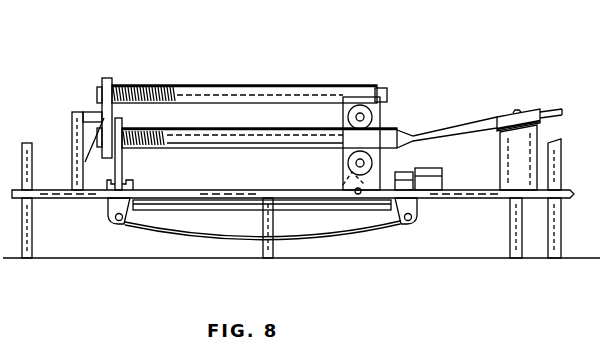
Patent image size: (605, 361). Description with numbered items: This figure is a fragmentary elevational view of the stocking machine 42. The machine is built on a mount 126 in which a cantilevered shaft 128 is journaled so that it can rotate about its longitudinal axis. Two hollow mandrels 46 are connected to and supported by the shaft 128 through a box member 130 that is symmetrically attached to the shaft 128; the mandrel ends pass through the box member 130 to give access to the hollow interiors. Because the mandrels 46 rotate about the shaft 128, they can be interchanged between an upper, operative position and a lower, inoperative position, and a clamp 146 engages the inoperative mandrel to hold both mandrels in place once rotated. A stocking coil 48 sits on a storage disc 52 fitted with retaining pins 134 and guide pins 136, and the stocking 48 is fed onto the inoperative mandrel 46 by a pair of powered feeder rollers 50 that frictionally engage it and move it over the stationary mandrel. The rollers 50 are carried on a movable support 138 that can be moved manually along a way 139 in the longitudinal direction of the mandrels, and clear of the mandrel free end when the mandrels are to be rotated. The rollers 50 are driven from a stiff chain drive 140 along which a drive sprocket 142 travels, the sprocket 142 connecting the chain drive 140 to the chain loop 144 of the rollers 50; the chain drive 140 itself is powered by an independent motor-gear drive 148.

The stocking machine 42 is at (234, 76).
The mandrels 46 is at (106, 112).
The stocking coil 48 is at (145, 123).
The feeder rollers 50 is at (389, 107).
The storage disc 52 is at (558, 103).
The mount 126 is at (77, 140).
The cantilevered shaft 128 is at (101, 116).
The box member 130 is at (103, 80).
The retaining pins 134 is at (517, 110).
The guide pins 136 is at (483, 111).
The movable support 138 is at (346, 95).
The way 139 is at (160, 204).
The stiff chain drive 140 is at (340, 245).
The drive sprocket 142 is at (343, 184).
The chain loop 144 is at (380, 226).
The clamp 146 is at (122, 160).
The motor-gear drive 148 is at (452, 168).